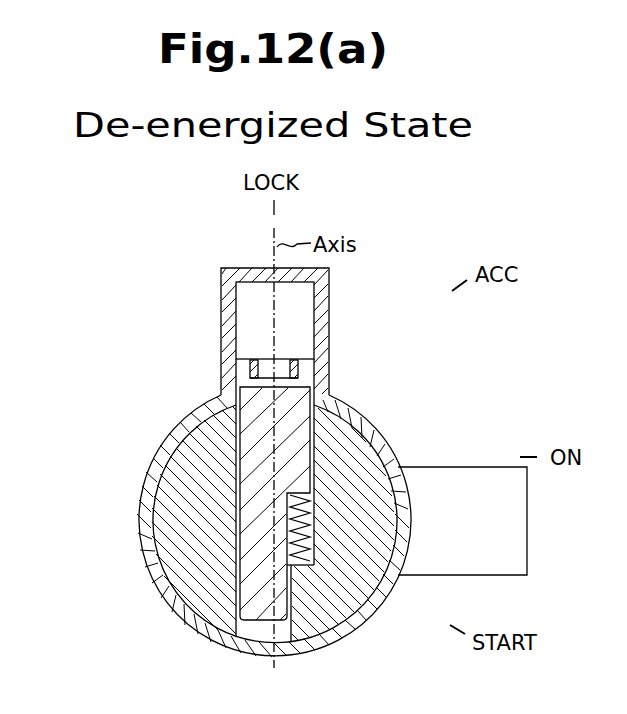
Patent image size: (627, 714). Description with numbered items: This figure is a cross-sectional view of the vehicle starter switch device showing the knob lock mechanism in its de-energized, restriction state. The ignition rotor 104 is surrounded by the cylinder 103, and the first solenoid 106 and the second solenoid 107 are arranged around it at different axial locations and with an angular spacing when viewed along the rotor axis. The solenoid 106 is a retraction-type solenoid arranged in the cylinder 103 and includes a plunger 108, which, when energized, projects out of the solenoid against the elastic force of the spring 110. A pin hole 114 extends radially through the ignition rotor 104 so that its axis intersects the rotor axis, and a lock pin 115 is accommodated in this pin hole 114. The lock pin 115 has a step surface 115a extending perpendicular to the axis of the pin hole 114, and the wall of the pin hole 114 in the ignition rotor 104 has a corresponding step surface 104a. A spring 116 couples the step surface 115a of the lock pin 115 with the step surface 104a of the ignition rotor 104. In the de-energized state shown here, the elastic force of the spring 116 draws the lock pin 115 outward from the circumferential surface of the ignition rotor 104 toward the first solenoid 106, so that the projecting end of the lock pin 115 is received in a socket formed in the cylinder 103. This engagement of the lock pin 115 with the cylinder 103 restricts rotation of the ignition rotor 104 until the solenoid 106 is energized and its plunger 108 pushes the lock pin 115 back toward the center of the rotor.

The cylinder 103 is at (337, 636).
The ignition rotor 104 is at (168, 573).
The step surface 104a is at (314, 560).
The first solenoid 106 is at (400, 317).
The second solenoid 107 is at (403, 578).
The plunger 108 is at (250, 376).
The spring 110 is at (302, 370).
The pin hole 114 is at (243, 626).
The lock pin 115 is at (240, 431).
The step surface 115a is at (361, 443).
The spring 116 is at (303, 528).